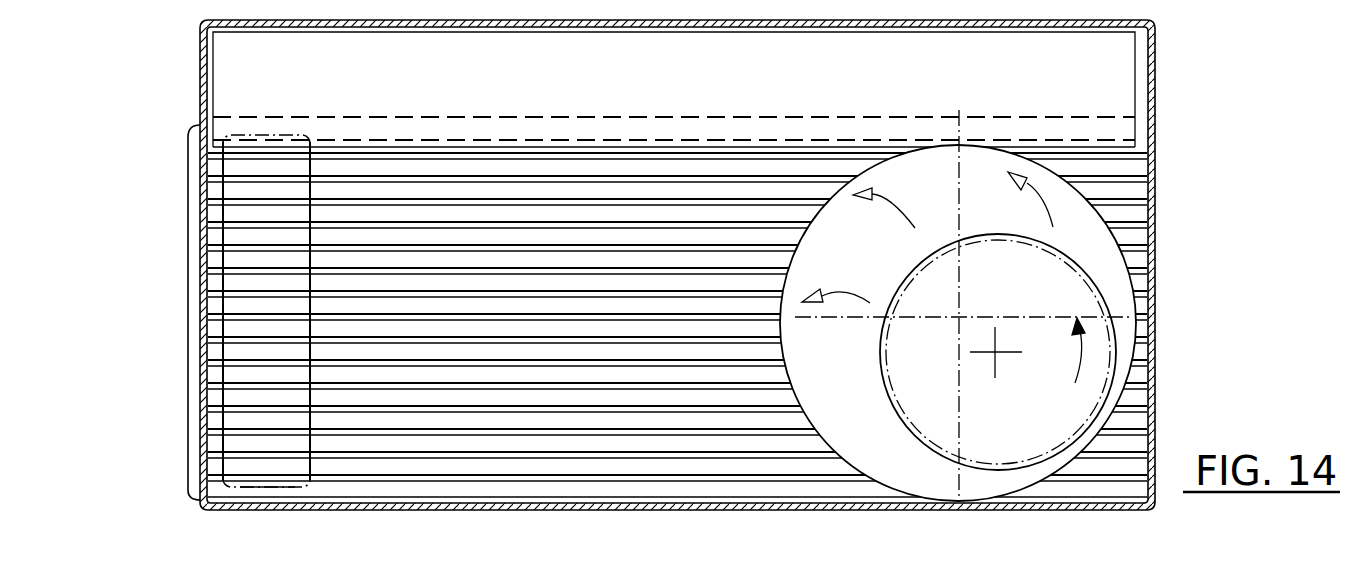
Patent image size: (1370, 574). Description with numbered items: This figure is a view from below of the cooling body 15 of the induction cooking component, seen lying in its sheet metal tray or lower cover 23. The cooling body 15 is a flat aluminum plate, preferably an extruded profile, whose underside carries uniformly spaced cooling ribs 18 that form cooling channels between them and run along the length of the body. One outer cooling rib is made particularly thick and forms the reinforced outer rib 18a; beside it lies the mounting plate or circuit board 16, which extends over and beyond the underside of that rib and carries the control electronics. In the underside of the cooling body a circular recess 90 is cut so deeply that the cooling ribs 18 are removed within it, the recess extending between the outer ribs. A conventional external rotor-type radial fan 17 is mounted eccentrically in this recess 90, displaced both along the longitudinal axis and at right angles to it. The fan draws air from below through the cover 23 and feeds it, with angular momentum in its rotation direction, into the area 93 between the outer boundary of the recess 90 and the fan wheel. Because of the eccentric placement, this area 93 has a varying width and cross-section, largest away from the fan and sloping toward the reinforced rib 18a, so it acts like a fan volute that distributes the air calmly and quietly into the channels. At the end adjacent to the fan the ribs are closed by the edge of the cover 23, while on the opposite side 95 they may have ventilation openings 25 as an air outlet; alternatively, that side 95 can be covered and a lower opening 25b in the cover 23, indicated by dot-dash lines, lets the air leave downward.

The sheet metal tray 23 is at (1160, 37).
The mounting plate 16 is at (1125, 83).
The reinforced outer rib 18a is at (1125, 128).
The cooling body 15 is at (1135, 170).
The cooling ribs 18 is at (460, 455).
The ventilation openings 25 is at (195, 305).
The bottom of slide member 25b is at (278, 488).
The opposite side of the cooling ribs 95 is at (200, 202).
The recess 90 is at (865, 445).
The area between recess boundary and fan wheel 93 is at (870, 259).
The radial fan 17 is at (945, 401).